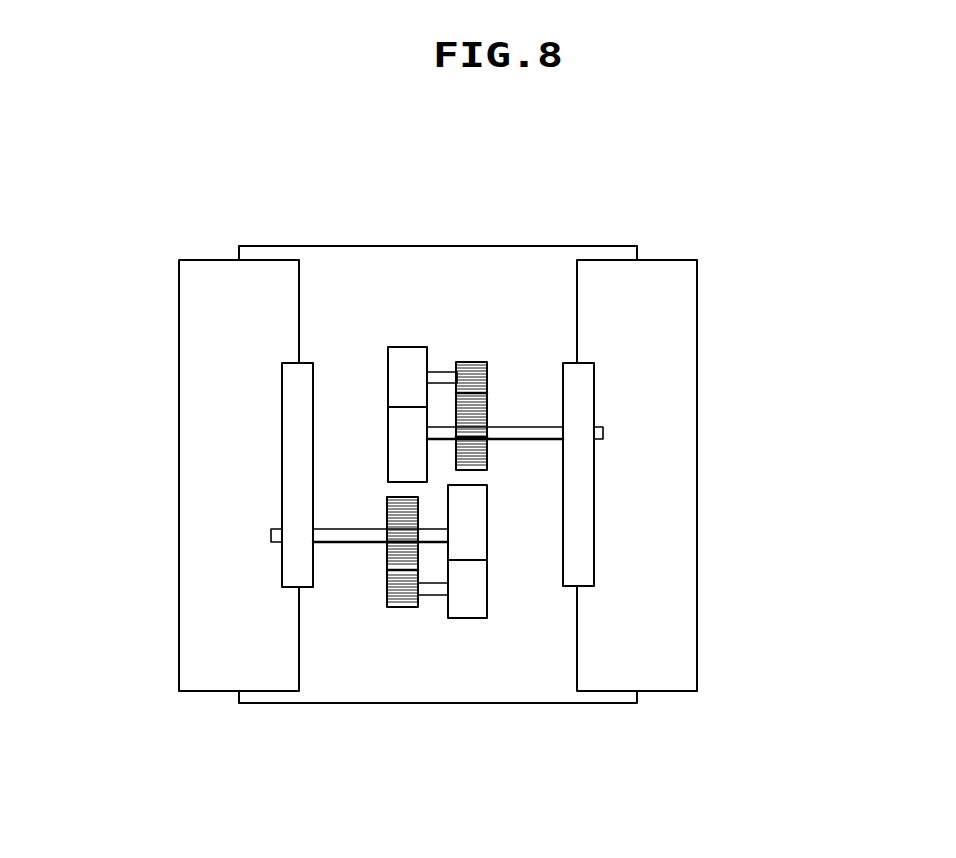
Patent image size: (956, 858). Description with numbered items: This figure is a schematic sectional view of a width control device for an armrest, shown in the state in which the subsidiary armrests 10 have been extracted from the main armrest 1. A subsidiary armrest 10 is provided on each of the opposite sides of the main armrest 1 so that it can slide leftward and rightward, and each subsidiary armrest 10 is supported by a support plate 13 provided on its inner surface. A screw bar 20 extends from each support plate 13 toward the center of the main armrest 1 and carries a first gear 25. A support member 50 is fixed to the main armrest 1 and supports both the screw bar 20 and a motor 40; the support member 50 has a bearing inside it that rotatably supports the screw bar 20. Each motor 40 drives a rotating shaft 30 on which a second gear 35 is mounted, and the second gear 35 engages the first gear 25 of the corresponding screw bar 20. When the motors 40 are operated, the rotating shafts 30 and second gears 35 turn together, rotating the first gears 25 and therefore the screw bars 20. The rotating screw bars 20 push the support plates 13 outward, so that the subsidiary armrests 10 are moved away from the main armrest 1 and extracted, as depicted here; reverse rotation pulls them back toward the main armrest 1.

The main armrest 1 is at (436, 678).
The subsidiary armrest 10 is at (215, 302).
The support plate 13 is at (295, 387).
The screw bar 20 is at (440, 432).
The first gear 25 is at (477, 447).
The rotating shaft 30 is at (445, 375).
The second gear 35 is at (473, 375).
The motor 40 is at (405, 357).
The support member 50 is at (405, 458).